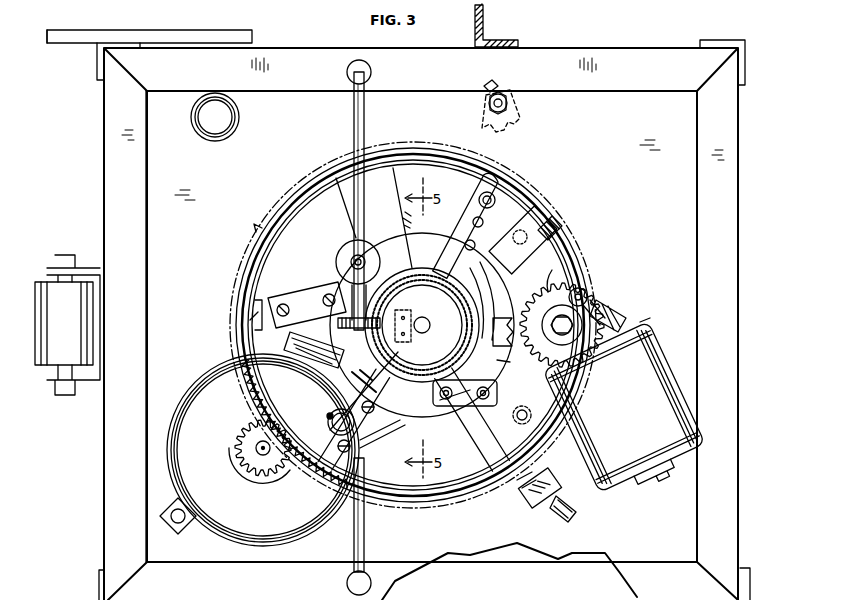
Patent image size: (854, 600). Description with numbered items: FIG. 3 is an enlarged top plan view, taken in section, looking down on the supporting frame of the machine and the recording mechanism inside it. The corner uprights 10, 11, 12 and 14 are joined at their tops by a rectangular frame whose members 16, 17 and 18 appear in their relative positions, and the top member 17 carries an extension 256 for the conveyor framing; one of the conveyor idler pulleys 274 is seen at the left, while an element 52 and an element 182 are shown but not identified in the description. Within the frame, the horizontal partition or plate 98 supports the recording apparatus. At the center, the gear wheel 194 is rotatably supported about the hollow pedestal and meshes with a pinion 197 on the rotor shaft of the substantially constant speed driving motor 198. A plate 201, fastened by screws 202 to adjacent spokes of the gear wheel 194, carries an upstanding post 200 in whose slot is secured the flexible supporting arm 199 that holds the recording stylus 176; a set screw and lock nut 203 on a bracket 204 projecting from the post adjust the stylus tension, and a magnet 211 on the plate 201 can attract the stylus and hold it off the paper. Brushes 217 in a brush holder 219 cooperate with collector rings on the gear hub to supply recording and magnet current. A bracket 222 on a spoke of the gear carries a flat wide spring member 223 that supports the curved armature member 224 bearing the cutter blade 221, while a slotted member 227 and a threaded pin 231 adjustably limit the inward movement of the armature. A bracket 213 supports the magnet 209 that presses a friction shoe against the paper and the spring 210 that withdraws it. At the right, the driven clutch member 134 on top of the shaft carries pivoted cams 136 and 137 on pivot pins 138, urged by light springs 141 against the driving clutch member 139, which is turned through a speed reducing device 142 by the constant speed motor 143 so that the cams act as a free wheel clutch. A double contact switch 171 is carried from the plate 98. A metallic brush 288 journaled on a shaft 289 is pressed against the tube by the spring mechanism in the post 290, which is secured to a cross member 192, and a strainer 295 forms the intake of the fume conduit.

The upright member 10 is at (750, 590).
The upright member 11 is at (745, 63).
The upright member 12 is at (94, 62).
The upright member 14 is at (99, 585).
The frame member 16 is at (740, 322).
The top frame member 17 is at (625, 52).
The frame member 18 is at (104, 178).
The angle post 52 is at (484, 20).
The horizontal partition 98 is at (738, 237).
The driven clutch member 134 is at (551, 272).
The driving cam 136 is at (583, 290).
The driving cam 137 is at (497, 383).
The pivot pin 138 is at (587, 300).
The driving clutch member 139 is at (580, 290).
The spring 141 is at (598, 312).
The speed reducing device 142 is at (645, 316).
The constant speed motor 143 is at (652, 336).
The switch 171 is at (526, 121).
The recording stylus 176 is at (405, 342).
The pivot bolt 182 is at (488, 103).
The cross member 192 is at (354, 118).
The gear wheel 194 is at (460, 506).
The pinion 197 is at (238, 462).
The driving motor 198 is at (240, 358).
The flexible supporting arm 199 is at (350, 384).
The post 200 is at (350, 445).
The plate 201 is at (280, 297).
The screw 202 is at (270, 310).
The set screw and lock nut 203 is at (348, 392).
The bracket 204 is at (336, 410).
The magnet 209 is at (528, 500).
The spring 210 is at (574, 510).
The magnet 211 is at (306, 352).
The bracket 213 is at (522, 492).
The brush 217 is at (541, 222).
The brush holder 219 is at (556, 240).
The cutter blade 221 is at (468, 406).
The bracket 222 is at (518, 188).
The flat wide spring member 223 is at (450, 298).
The curved armature member 224 is at (368, 410).
The slotted member 227 is at (490, 300).
The threaded pin 231 is at (521, 406).
The extension 256 is at (64, 30).
The idler pulley 274 is at (38, 370).
The metallic brush 288 is at (345, 316).
The shaft 289 is at (352, 292).
The post 290 is at (345, 252).
The strainer 295 is at (205, 128).